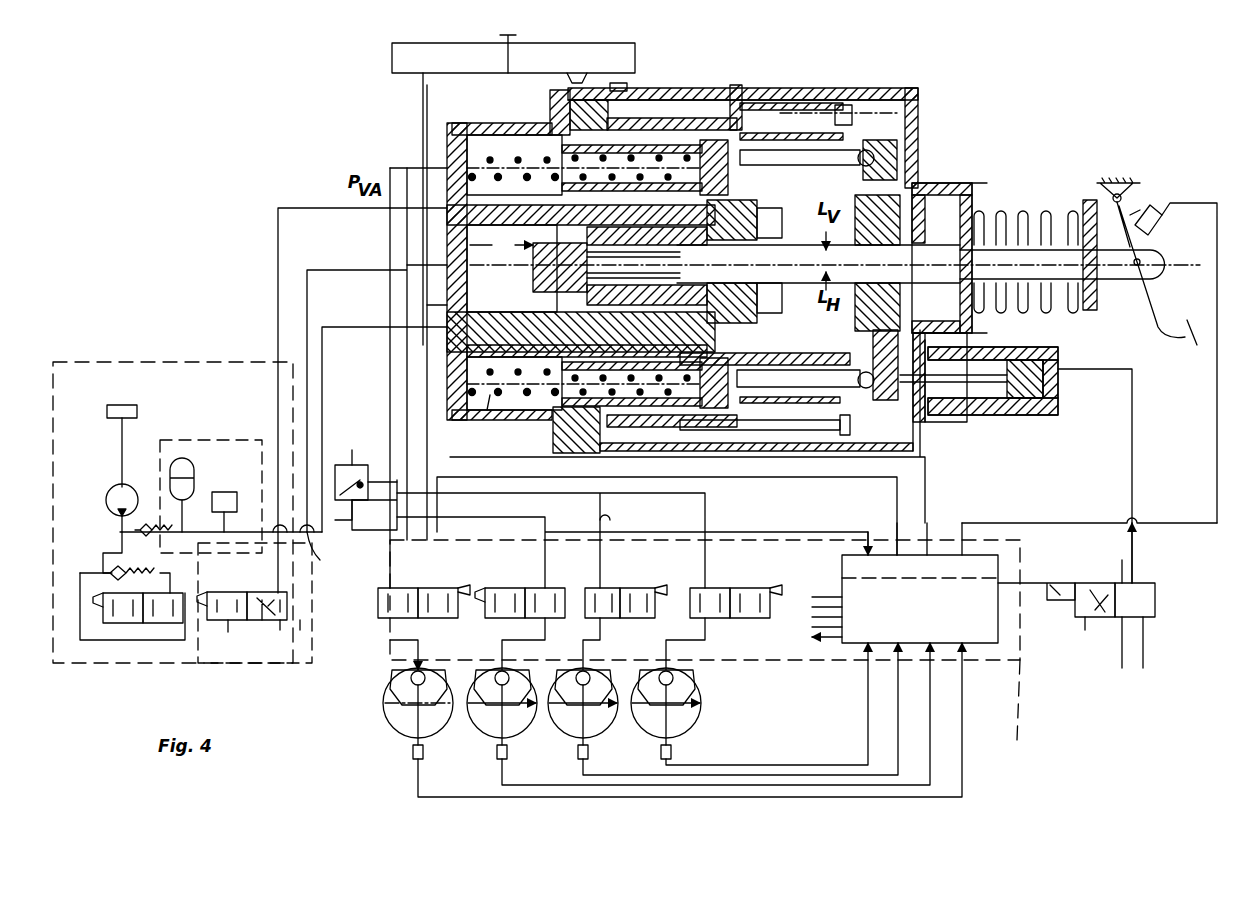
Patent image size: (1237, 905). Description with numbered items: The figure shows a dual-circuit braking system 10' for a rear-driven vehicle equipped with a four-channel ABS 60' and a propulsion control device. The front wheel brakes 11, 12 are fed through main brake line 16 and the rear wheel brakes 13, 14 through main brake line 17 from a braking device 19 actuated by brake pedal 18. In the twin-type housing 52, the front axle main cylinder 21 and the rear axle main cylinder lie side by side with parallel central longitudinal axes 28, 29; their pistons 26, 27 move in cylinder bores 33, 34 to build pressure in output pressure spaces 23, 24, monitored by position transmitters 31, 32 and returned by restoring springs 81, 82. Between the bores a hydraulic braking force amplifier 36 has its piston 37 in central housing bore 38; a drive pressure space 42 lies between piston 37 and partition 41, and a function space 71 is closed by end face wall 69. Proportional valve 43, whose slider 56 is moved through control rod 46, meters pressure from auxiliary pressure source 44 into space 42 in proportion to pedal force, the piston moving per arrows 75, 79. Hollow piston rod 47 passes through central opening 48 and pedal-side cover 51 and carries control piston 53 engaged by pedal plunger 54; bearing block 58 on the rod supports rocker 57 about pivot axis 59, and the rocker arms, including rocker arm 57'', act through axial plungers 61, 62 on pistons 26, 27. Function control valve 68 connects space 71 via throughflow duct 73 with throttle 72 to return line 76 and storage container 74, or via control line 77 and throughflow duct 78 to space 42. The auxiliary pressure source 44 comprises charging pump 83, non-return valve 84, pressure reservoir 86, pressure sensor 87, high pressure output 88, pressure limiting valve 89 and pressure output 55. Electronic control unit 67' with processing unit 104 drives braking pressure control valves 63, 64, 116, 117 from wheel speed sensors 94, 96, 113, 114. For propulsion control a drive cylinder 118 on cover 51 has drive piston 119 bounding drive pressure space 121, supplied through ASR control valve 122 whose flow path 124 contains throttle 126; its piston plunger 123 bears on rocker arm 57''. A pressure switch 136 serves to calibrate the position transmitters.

The dual-circuit braking system 10' is at (398, 190).
The front wheel brake 11 is at (400, 720).
The front wheel brake 12 is at (495, 718).
The rear wheel brake 13 is at (595, 718).
The rear wheel brake 14 is at (688, 716).
The main brake line 16 is at (390, 362).
The main brake line 17 is at (624, 532).
The brake pedal 18 is at (1158, 325).
The braking device 19 is at (918, 92).
The main cylinder 21 is at (445, 136).
The output pressure space 23 is at (482, 140).
The output pressure space 24 is at (478, 418).
The main cylinder piston 26 is at (700, 128).
The main cylinder piston 27 is at (590, 420).
The central longitudinal axis 28 is at (660, 128).
The central longitudinal axis 29 is at (492, 418).
The position transmitter 31 is at (735, 112).
The position transmitter 32 is at (723, 430).
The cylinder bore 33 is at (533, 145).
The cylinder bore 34 is at (532, 410).
The hydraulic braking force amplifier 36 is at (445, 227).
The amplifier piston 37 is at (555, 300).
The central housing bore 38 is at (470, 295).
The internal partition 41 is at (762, 310).
The drive pressure space 42 is at (757, 232).
The proportional valve 43 is at (532, 272).
The auxiliary pressure source 44 is at (134, 349).
The control rod 46 is at (808, 290).
The hollow piston rod 47 is at (815, 245).
The central opening 48 is at (757, 296).
The pedal-side cover 51 is at (920, 120).
The main cylinder and amplifier housing 52 is at (876, 90).
The control piston 53 is at (1004, 273).
The pedal plunger 54 is at (1069, 267).
The pressure output 55 is at (312, 562).
The slider 56 is at (835, 261).
The rocker 57 is at (866, 297).
The rocker arm 57'' is at (876, 427).
The bearing block 58 is at (983, 300).
The axis of pivoting 59 is at (925, 185).
The four-channel ABS 60' is at (718, 641).
The axial plunger 61 is at (800, 160).
The axial plunger 62 is at (818, 388).
The braking pressure control valve 63 is at (378, 612).
The braking pressure control valve 64 is at (505, 590).
The electronic control unit 67' is at (834, 665).
The function control valve 68 is at (292, 598).
The end face wall 69 is at (470, 257).
The function space 71 is at (470, 290).
The throttle 72 is at (258, 620).
The throughflow duct 73 is at (288, 620).
The pressureless storage container 74 is at (107, 414).
The arrow 75 is at (581, 273).
The return line 76 is at (232, 438).
The control line 77 is at (278, 335).
The throughflow duct 78 is at (235, 620).
The direction arrow 79 is at (581, 332).
The piston restoring spring 81 is at (492, 158).
The piston restoring spring 82 is at (520, 418).
The reservoir charging pump 83 is at (115, 487).
The non-return valve 84 is at (142, 522).
The pressure reservoir 86 is at (193, 470).
The pressure sensor 87 is at (224, 492).
The high pressure output 88 is at (118, 525).
The pressure limiting valve 89 is at (112, 565).
The wheel speed sensor 94 is at (408, 755).
The wheel speed sensor 96 is at (495, 755).
The processing unit 104 is at (842, 572).
The wheel speed sensor 113 is at (578, 752).
The wheel speed sensor 114 is at (671, 752).
The braking pressure control valve 116 is at (638, 592).
The braking pressure control valve 117 is at (722, 592).
The drive cylinder 118 is at (1065, 395).
The drive piston 119 is at (1015, 400).
The drive pressure space 121 is at (1058, 370).
The ASR control valve 122 is at (1155, 588).
The piston plunger 123 is at (965, 400).
The flow path 124 is at (1105, 582).
The throttle 126 is at (1100, 620).
The pressure switch 136 is at (364, 475).